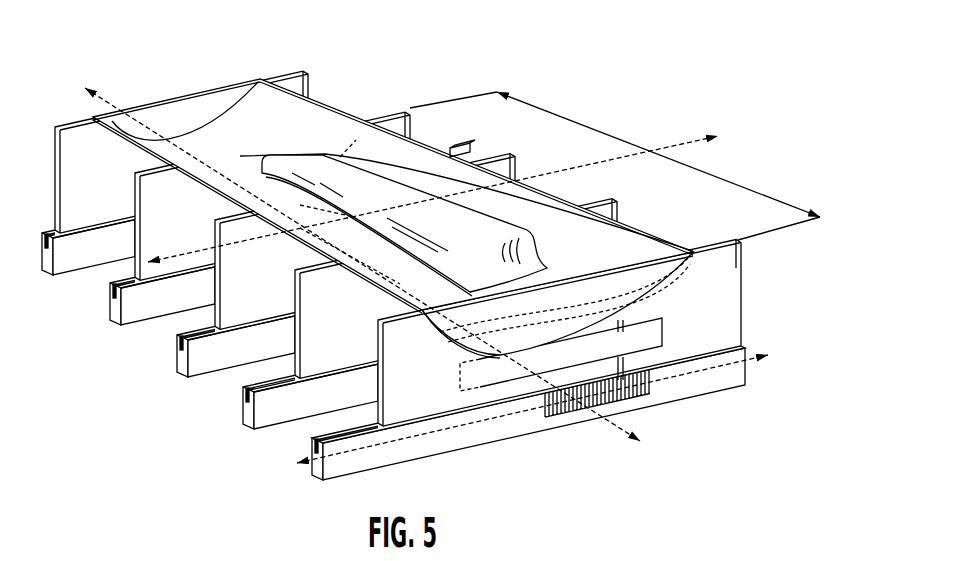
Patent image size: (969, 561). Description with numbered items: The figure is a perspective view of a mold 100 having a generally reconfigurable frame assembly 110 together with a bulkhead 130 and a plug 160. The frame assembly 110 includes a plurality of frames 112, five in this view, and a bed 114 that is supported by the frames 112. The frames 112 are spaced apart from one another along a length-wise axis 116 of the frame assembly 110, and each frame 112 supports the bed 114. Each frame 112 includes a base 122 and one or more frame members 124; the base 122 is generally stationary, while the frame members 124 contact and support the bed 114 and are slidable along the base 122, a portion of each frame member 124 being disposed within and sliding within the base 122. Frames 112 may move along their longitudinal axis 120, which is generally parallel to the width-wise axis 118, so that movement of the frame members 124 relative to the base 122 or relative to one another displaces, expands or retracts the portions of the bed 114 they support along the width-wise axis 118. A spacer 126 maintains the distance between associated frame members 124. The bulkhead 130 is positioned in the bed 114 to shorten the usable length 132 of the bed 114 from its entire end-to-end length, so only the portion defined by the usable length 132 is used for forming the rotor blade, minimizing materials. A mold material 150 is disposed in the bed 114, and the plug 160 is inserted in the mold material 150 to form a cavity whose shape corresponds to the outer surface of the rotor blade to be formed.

The mold 100 is at (417, 254).
The frame assembly 110 is at (405, 276).
The frames 112 is at (106, 320).
The bed 114 is at (393, 201).
The length-wise axis 116 is at (612, 424).
The width-wise axis 118 is at (670, 143).
The longitudinal axis 120 is at (760, 362).
The base 122 is at (690, 380).
The frame members 124 is at (698, 320).
The spacer 126 is at (481, 372).
The bulkhead 130 is at (343, 133).
The usable length 132 is at (567, 107).
The mold material 150 is at (594, 250).
The plug 160 is at (305, 170).